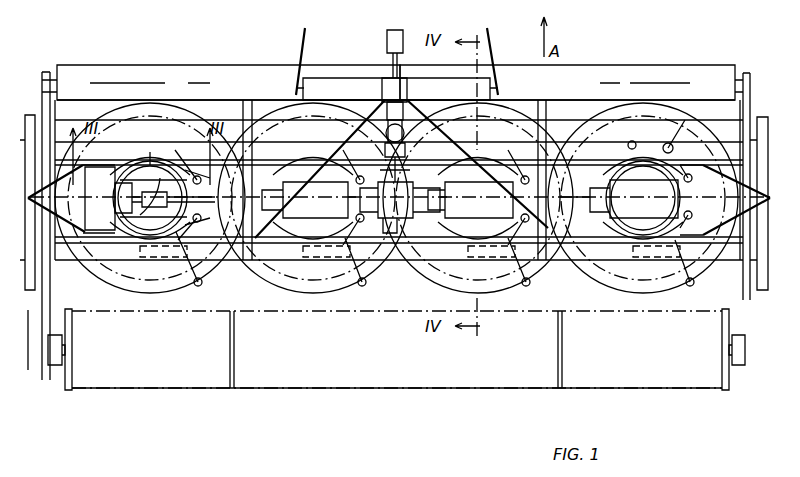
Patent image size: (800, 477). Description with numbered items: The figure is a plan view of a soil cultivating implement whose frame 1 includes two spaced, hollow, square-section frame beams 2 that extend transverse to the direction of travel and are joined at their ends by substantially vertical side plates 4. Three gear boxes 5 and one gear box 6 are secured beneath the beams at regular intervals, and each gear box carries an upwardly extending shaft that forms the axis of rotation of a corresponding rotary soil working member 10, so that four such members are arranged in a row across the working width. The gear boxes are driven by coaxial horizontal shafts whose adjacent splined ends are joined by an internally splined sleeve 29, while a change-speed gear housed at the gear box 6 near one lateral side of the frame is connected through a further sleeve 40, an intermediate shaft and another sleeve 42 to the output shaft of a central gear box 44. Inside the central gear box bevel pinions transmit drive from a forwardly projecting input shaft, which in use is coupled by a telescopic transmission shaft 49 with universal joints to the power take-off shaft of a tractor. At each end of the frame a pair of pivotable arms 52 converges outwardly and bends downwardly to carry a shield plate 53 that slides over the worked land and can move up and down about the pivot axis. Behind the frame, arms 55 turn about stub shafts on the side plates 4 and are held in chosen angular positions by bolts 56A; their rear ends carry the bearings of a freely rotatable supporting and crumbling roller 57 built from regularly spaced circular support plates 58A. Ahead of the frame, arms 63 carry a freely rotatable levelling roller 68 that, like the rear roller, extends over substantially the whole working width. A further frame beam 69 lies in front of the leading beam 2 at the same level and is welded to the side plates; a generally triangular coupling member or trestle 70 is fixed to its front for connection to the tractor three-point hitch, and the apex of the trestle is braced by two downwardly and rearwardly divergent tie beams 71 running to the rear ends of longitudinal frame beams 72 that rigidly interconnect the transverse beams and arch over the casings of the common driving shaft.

The frame 1 is at (650, 100).
The frame beams 2 is at (300, 148).
The side plates 4 is at (70, 100).
The gear boxes 5 is at (310, 210).
The gear box 6 is at (140, 212).
The rotary soil working member 10 is at (252, 284).
The sleeve 29 is at (150, 150).
The sleeve 40 is at (150, 212).
The sleeve 42 is at (352, 265).
The central gear box 44 is at (398, 233).
The telescopic transmission shaft 49 is at (408, 100).
The arms 52 is at (716, 230).
The shield plates 53 is at (760, 117).
The arm 55 is at (50, 366).
The bolts 56A is at (56, 296).
The roller 57 is at (475, 390).
The support plates 58A is at (235, 360).
The arms 63 is at (56, 72).
The roller 68 is at (200, 63).
The further frame beam 69 is at (597, 120).
The coupling member or trestle 70 is at (323, 78).
The tie beams 71 is at (385, 86).
The frame beams 72 is at (252, 70).